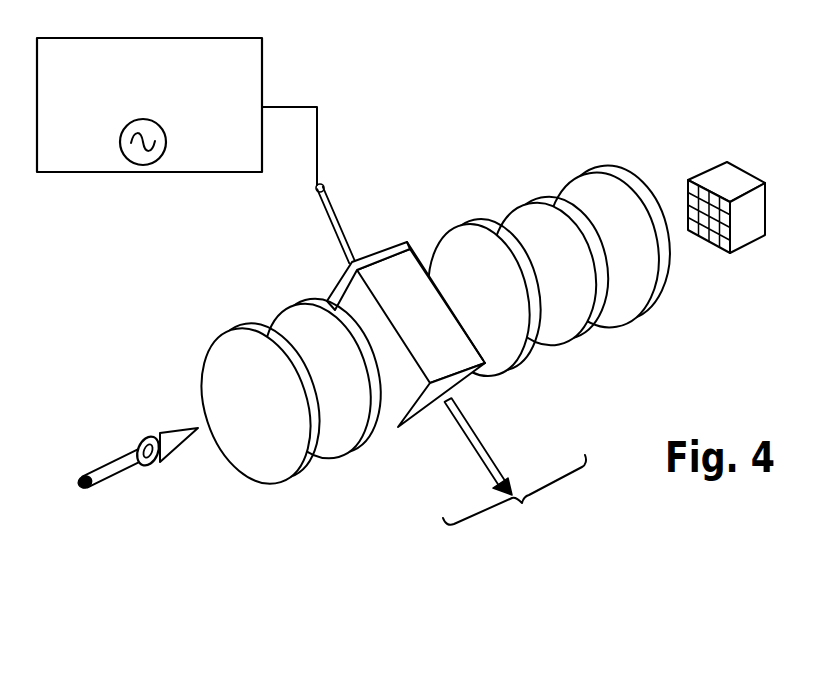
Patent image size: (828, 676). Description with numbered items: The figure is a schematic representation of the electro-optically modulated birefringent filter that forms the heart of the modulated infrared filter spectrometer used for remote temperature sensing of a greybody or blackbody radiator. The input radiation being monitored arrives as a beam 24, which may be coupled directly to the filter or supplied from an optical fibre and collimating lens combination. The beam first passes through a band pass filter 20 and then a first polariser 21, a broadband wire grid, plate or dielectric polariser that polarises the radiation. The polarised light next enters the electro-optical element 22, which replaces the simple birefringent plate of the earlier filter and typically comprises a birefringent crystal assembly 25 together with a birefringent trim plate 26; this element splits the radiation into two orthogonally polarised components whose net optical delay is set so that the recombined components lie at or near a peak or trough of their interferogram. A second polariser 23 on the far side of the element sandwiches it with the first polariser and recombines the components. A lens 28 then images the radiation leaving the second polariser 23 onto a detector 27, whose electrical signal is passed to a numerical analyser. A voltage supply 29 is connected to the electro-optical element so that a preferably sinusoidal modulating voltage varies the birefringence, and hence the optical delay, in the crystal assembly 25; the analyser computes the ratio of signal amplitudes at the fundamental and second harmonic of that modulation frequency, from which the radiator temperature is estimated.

The band pass filter 20 is at (306, 470).
The first polariser 21 is at (364, 443).
The electro-optical element 22 is at (514, 469).
The second polariser 23 is at (517, 222).
The beam 24 is at (167, 442).
The birefringent crystal assembly 25 is at (393, 268).
The birefringent trim plate 26 is at (452, 242).
The detector 27 is at (707, 178).
The lens 28 is at (576, 205).
The voltage supply 29 is at (103, 155).